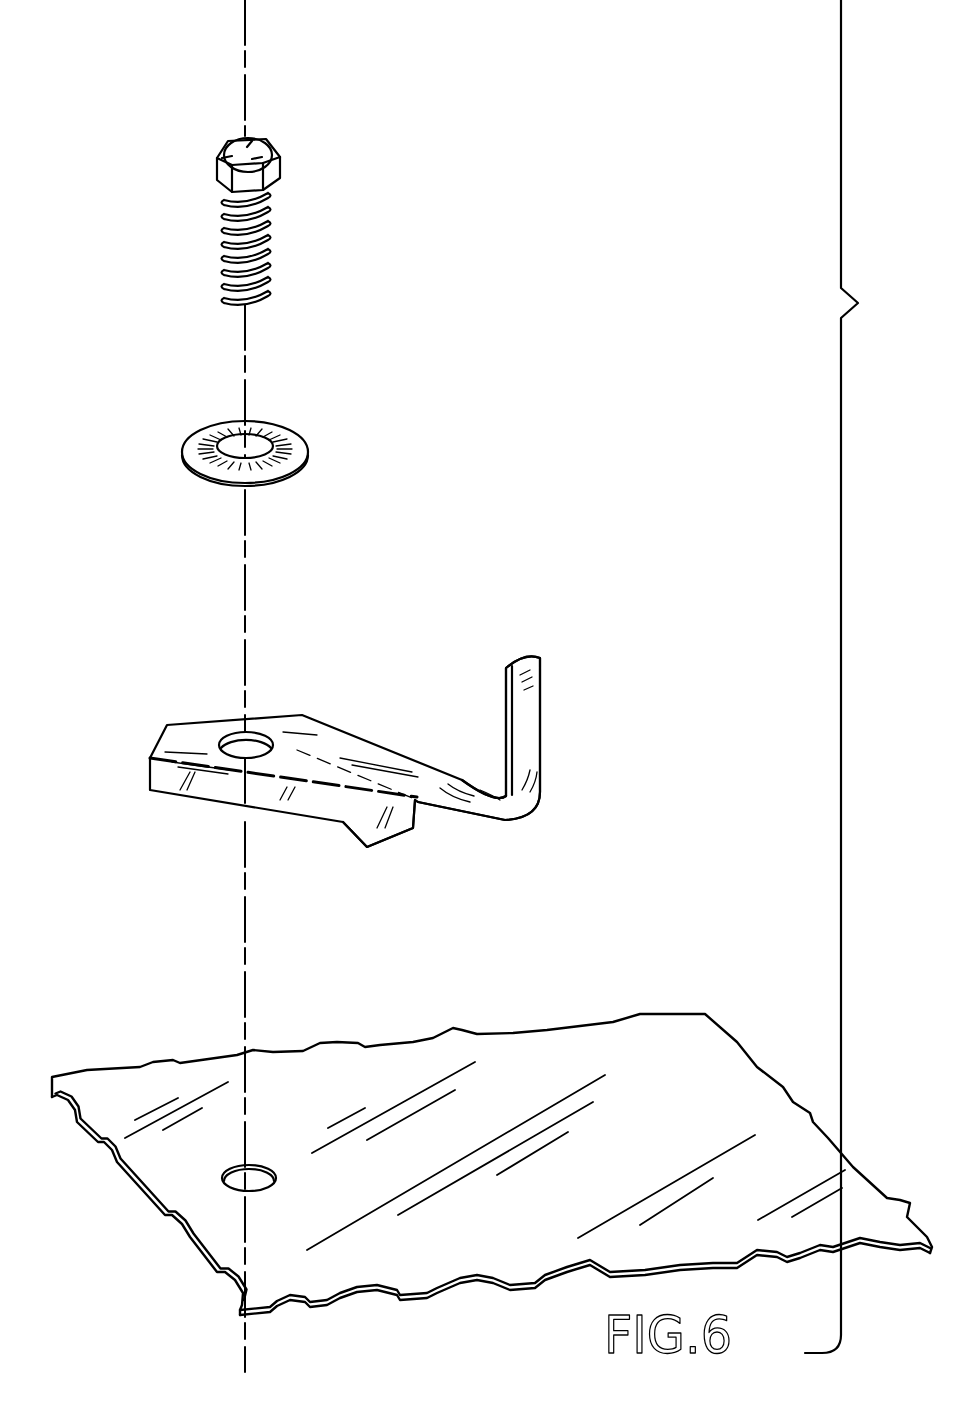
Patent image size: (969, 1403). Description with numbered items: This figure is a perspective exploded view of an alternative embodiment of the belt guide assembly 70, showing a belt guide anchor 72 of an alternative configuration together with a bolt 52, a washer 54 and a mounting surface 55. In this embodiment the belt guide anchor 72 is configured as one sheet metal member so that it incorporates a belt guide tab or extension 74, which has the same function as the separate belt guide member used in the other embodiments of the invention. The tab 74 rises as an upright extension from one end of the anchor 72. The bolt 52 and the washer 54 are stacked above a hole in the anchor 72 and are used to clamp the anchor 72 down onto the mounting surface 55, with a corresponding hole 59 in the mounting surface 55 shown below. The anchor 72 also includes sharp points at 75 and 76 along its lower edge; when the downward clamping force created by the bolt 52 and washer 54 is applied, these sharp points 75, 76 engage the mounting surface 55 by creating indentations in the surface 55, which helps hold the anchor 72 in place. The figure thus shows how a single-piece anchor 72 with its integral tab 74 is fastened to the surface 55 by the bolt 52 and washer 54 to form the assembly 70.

The bolt 52 is at (266, 217).
The washer 54 is at (290, 433).
The mounting surface 55 is at (683, 1053).
The panel hole 59 is at (243, 1193).
The belt guide assembly 70 is at (852, 676).
The belt guide anchor 72 is at (173, 742).
The belt guide tab 74 is at (535, 715).
The sharp point 75 is at (465, 816).
The sharp point 76 is at (367, 847).